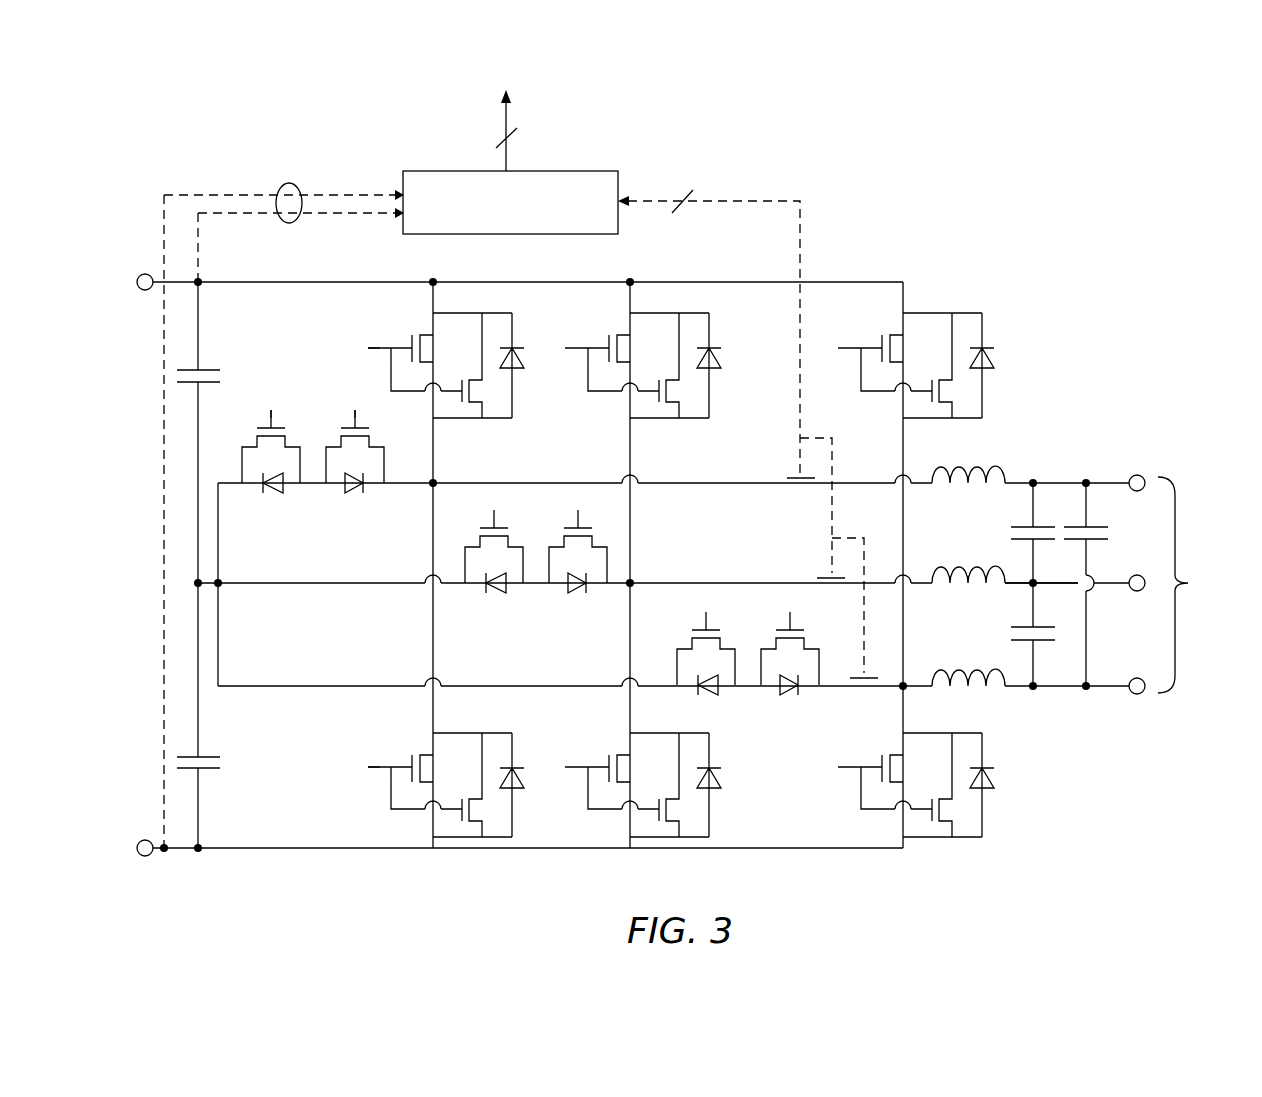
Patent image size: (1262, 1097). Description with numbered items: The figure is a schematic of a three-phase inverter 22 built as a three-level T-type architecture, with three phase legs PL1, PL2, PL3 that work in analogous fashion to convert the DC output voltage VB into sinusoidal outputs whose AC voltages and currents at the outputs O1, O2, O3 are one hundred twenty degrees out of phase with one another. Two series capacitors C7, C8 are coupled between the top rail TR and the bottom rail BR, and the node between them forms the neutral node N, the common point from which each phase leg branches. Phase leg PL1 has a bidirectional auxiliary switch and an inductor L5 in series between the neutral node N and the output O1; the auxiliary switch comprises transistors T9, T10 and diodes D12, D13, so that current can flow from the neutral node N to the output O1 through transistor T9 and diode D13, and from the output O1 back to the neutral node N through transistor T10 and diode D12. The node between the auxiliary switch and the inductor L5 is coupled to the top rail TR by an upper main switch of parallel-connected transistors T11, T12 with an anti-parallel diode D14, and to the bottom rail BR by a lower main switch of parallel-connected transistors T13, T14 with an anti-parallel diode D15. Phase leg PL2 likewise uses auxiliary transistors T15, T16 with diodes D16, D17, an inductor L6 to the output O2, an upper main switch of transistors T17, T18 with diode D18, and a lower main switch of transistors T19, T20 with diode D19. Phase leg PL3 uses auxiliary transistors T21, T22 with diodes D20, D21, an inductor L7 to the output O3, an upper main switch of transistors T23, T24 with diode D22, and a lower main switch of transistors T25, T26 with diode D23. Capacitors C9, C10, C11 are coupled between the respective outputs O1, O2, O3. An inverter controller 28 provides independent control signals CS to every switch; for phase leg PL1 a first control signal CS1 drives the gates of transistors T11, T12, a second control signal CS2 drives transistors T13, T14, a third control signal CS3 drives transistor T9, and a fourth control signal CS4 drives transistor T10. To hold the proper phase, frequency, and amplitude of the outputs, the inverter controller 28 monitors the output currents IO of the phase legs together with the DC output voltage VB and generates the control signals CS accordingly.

The three-phase inverter 22 is at (803, 125).
The inverter controller 28 is at (580, 171).
The top rail TR is at (246, 282).
The bottom rail BR is at (250, 848).
The neutral node N is at (653, 583).
The phase leg PL1 is at (520, 483).
The phase leg PL2 is at (690, 583).
The phase leg PL3 is at (278, 686).
The capacitor C7 is at (205, 370).
The capacitor C8 is at (205, 757).
The capacitor C9 is at (1018, 525).
The capacitor C10 is at (1018, 625).
The capacitor C11 is at (1094, 525).
The inductor L5 is at (990, 467).
The inductor L6 is at (990, 567).
The inductor L7 is at (990, 670).
The transistor T9 is at (257, 441).
The transistor T10 is at (369, 441).
The transistor T11 is at (426, 333).
The transistor T12 is at (469, 378).
The transistor T13 is at (426, 753).
The transistor T14 is at (470, 797).
The transistor T15 is at (480, 541).
The transistor T16 is at (592, 541).
The transistor T17 is at (623, 333).
The transistor T18 is at (666, 378).
The transistor T19 is at (623, 753).
The transistor T20 is at (667, 797).
The transistor T21 is at (692, 643).
The transistor T22 is at (804, 643).
The transistor T23 is at (896, 333).
The transistor T24 is at (939, 378).
The transistor T25 is at (893, 753).
The transistor T26 is at (940, 797).
The diode D12 is at (283, 490).
The diode D13 is at (350, 490).
The anti-parallel diode D14 is at (521, 370).
The anti-parallel diode D15 is at (521, 790).
The diode D16 is at (506, 590).
The diode D17 is at (573, 590).
The anti-parallel diode D18 is at (718, 370).
The anti-parallel diode D19 is at (718, 790).
The diode D20 is at (718, 692).
The diode D21 is at (785, 692).
The anti-parallel diode D22 is at (991, 370).
The anti-parallel diode D23 is at (991, 790).
The control signals CS is at (658, 422).
The first control signal CS1 is at (355, 348).
The second control signal CS2 is at (355, 767).
The third control signal CS3 is at (270, 402).
The fourth control signal CS4 is at (354, 402).
The DC output voltage VB is at (289, 183).
The output currents IO is at (748, 428).
The output O1 is at (1140, 475).
The output O2 is at (1140, 575).
The output O3 is at (1140, 678).